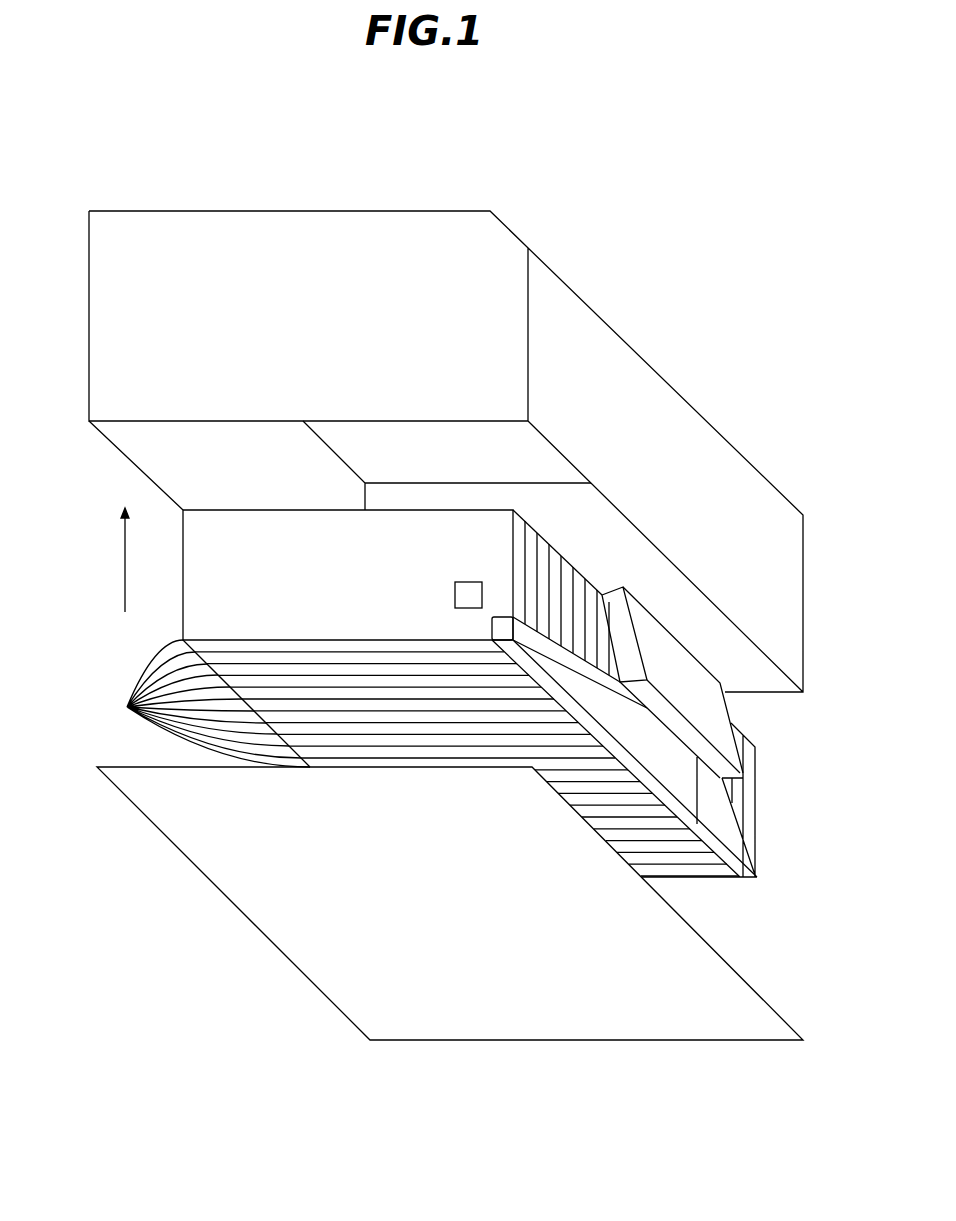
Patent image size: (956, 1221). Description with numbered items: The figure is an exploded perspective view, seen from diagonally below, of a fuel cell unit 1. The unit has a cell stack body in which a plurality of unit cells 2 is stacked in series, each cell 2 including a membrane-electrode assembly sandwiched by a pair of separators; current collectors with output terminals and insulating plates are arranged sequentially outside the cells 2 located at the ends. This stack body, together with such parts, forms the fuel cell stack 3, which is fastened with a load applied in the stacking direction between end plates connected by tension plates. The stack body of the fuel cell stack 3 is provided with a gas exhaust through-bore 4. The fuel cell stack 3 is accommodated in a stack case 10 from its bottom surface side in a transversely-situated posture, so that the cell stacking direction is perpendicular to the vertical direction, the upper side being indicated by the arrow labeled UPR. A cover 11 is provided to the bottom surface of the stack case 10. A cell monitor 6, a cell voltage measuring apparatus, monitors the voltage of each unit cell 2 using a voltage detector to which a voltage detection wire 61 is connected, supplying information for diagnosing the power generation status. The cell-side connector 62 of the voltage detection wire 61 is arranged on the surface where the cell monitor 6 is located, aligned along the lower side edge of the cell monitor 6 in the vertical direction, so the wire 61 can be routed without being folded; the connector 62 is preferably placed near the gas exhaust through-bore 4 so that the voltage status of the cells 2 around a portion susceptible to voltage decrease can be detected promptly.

The fuel cell unit 1 is at (768, 197).
The stack case 10 is at (278, 233).
The cover 11 is at (280, 913).
The unit cell 2 is at (422, 758).
The fuel cell stack 3 is at (170, 630).
The gas exhaust through-bore 4 is at (467, 592).
The cell monitor 6 is at (725, 702).
The voltage detection wire 61 is at (722, 805).
The cell-side connector 62 is at (492, 626).